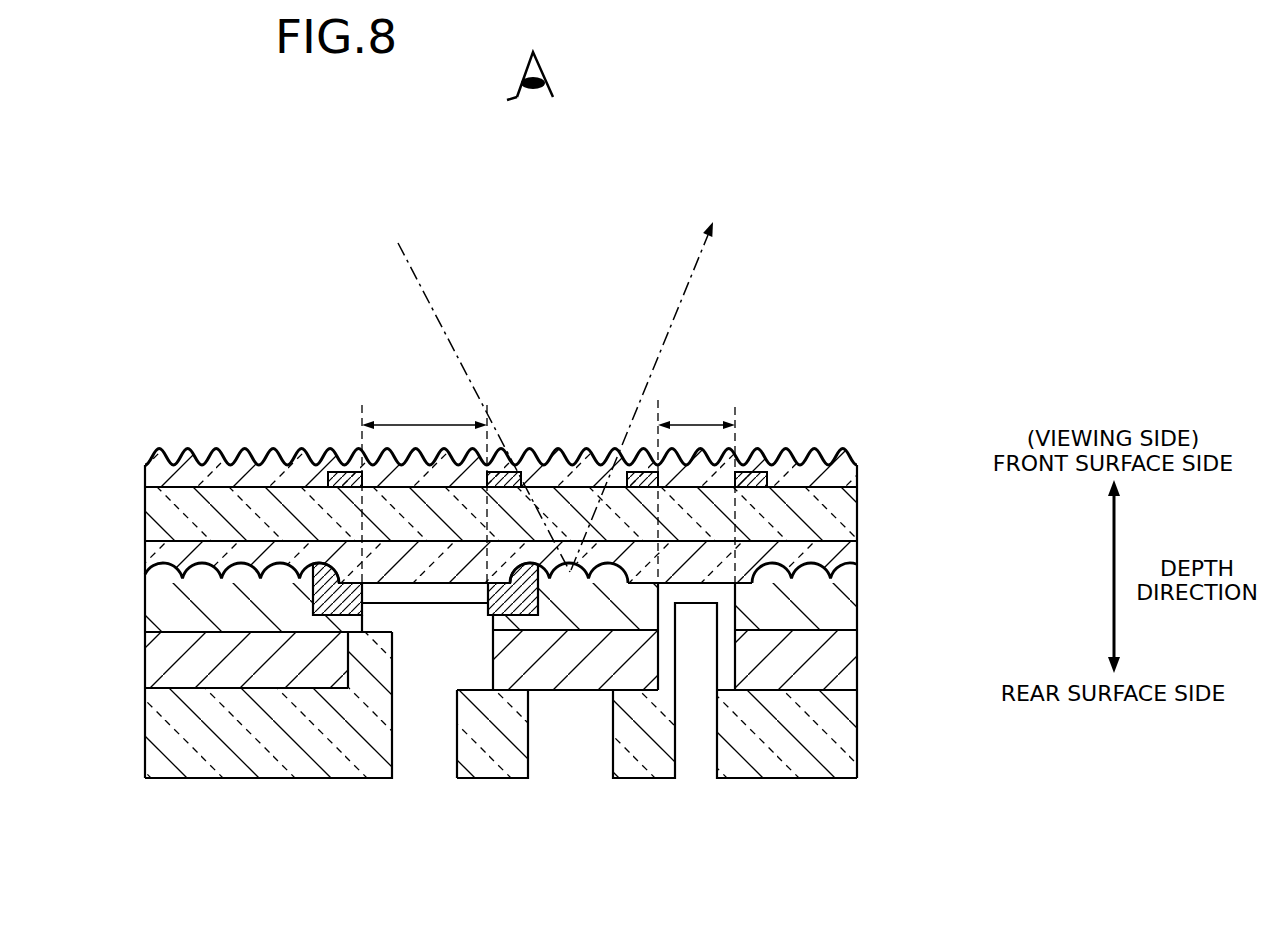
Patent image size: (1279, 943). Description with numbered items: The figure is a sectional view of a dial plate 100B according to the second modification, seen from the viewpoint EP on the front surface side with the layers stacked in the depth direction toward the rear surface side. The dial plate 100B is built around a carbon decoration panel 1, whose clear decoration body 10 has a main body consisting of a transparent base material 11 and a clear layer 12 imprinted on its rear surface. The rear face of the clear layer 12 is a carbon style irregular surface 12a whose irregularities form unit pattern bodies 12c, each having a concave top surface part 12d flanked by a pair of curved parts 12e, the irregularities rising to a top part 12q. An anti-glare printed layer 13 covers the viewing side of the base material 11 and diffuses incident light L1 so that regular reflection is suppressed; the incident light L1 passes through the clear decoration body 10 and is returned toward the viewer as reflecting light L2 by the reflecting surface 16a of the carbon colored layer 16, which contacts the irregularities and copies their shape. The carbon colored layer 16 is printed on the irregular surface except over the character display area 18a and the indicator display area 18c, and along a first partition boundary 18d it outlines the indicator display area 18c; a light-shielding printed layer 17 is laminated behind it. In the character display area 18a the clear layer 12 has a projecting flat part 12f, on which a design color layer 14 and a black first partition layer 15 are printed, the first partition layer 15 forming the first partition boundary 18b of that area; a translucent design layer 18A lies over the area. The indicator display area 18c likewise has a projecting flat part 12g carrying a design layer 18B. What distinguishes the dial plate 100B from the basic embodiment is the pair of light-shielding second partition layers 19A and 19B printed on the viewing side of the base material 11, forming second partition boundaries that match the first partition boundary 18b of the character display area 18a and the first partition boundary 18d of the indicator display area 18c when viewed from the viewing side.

The carbon decoration panel 1 is at (1002, 522).
The clear decoration body 10 is at (918, 495).
The base material 11 is at (858, 508).
The clear layer 12 is at (858, 558).
The carbon style irregular surface 12a is at (289, 582).
The unit pattern body 12c is at (212, 888).
The top surface part 12d is at (201, 565).
The curved parts 12e is at (221, 586).
The projecting flat part 12f is at (417, 604).
The projecting flat part 12g is at (697, 604).
The top part 12q is at (239, 592).
The anti-glare printed layer 13 is at (858, 455).
The design color layer 14 is at (434, 604).
The first partition layer 15 is at (522, 616).
The carbon colored layer 16 is at (858, 597).
The reflecting surface 16a is at (243, 556).
The light-shielding printed layer 17 is at (858, 660).
The design layer 18A is at (380, 745).
The design layer 18B is at (775, 779).
The character display area 18a is at (420, 424).
The first partition boundary 18b is at (485, 458).
The indicator display area 18c is at (700, 424).
The first partition boundary 18d is at (737, 408).
The second partition layer 19A is at (512, 472).
The second partition layer 19B is at (757, 471).
The dial plate 100B is at (845, 320).
The viewpoint EP is at (545, 59).
The incident light L1 is at (420, 283).
The reflecting light L2 is at (683, 290).